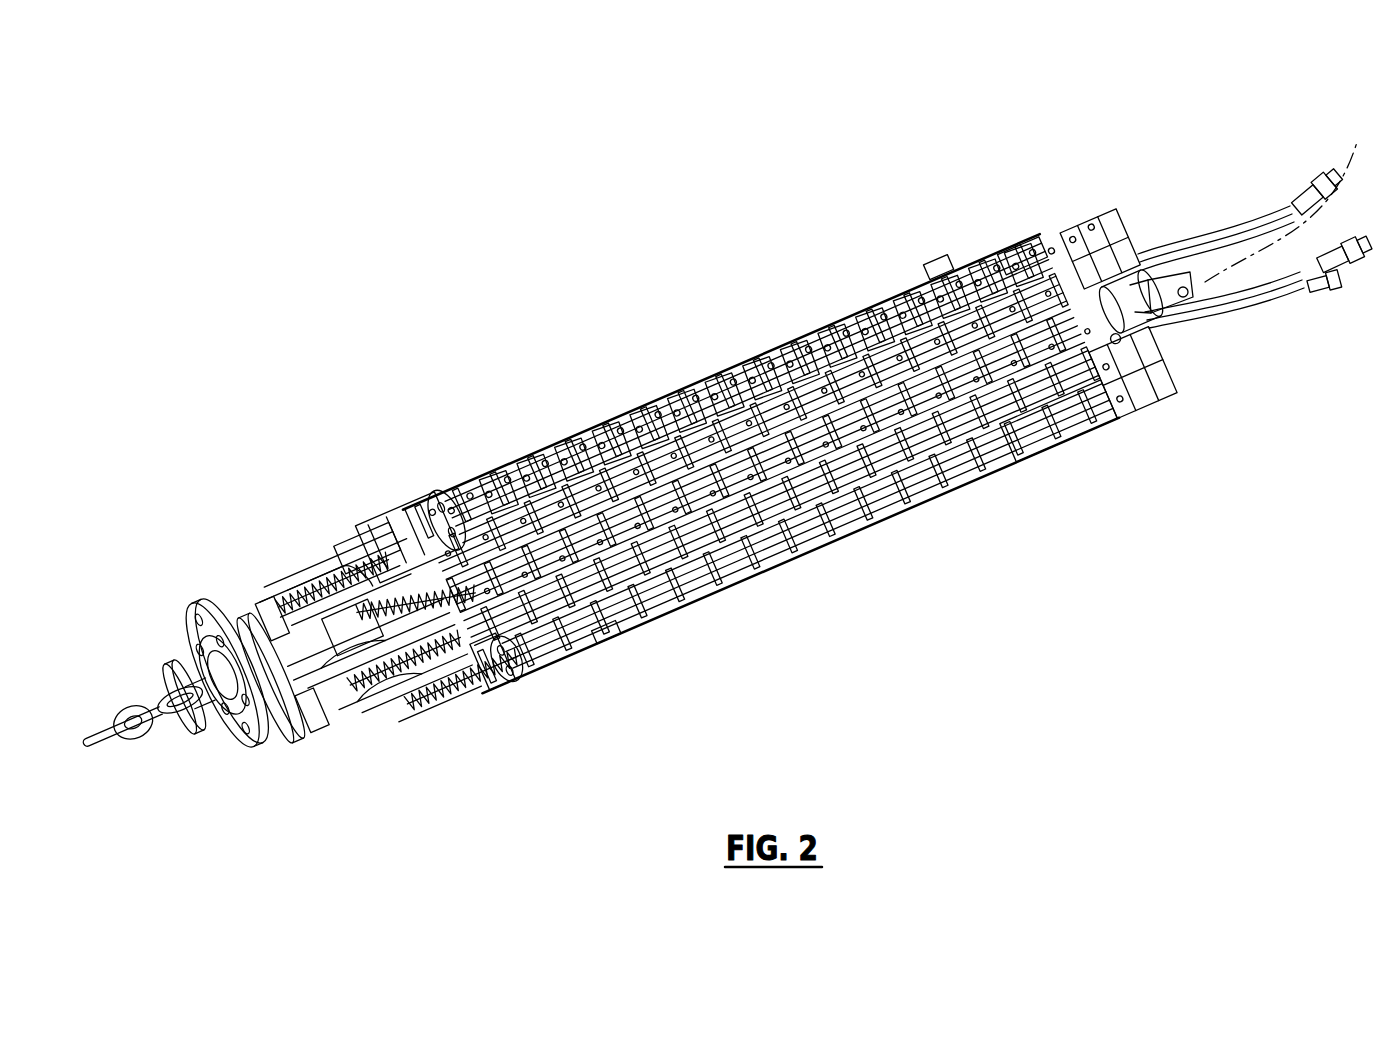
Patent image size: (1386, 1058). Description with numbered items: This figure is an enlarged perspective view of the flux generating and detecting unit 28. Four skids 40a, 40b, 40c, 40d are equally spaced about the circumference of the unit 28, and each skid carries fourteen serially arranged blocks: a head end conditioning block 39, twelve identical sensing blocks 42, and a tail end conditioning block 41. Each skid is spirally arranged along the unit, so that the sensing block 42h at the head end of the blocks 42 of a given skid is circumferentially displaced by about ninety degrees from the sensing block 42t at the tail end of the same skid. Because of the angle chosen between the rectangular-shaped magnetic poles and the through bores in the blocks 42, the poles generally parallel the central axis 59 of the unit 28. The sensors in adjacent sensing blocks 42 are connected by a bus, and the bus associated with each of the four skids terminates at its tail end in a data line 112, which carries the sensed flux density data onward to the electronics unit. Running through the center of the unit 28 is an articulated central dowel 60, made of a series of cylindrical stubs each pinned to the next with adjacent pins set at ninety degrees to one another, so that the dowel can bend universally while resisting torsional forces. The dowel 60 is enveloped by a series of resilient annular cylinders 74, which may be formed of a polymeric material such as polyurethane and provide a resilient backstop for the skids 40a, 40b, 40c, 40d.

The flux generating and detecting unit 28 is at (621, 288).
The head end conditioning block 39 is at (508, 660).
The skid 40a is at (405, 502).
The skid 40b is at (657, 398).
The skid 40c is at (907, 303).
The skid 40d is at (1083, 433).
The tail end conditioning block 41 is at (1007, 258).
The sensing block 42 is at (673, 382).
The tail end sensing block 42t is at (938, 260).
The head end sensing block 42h is at (605, 628).
The central axis 59 is at (1252, 209).
The articulated central dowel 60 is at (310, 653).
The resilient annular cylinders 74 is at (437, 607).
The data line 112 is at (1210, 227).